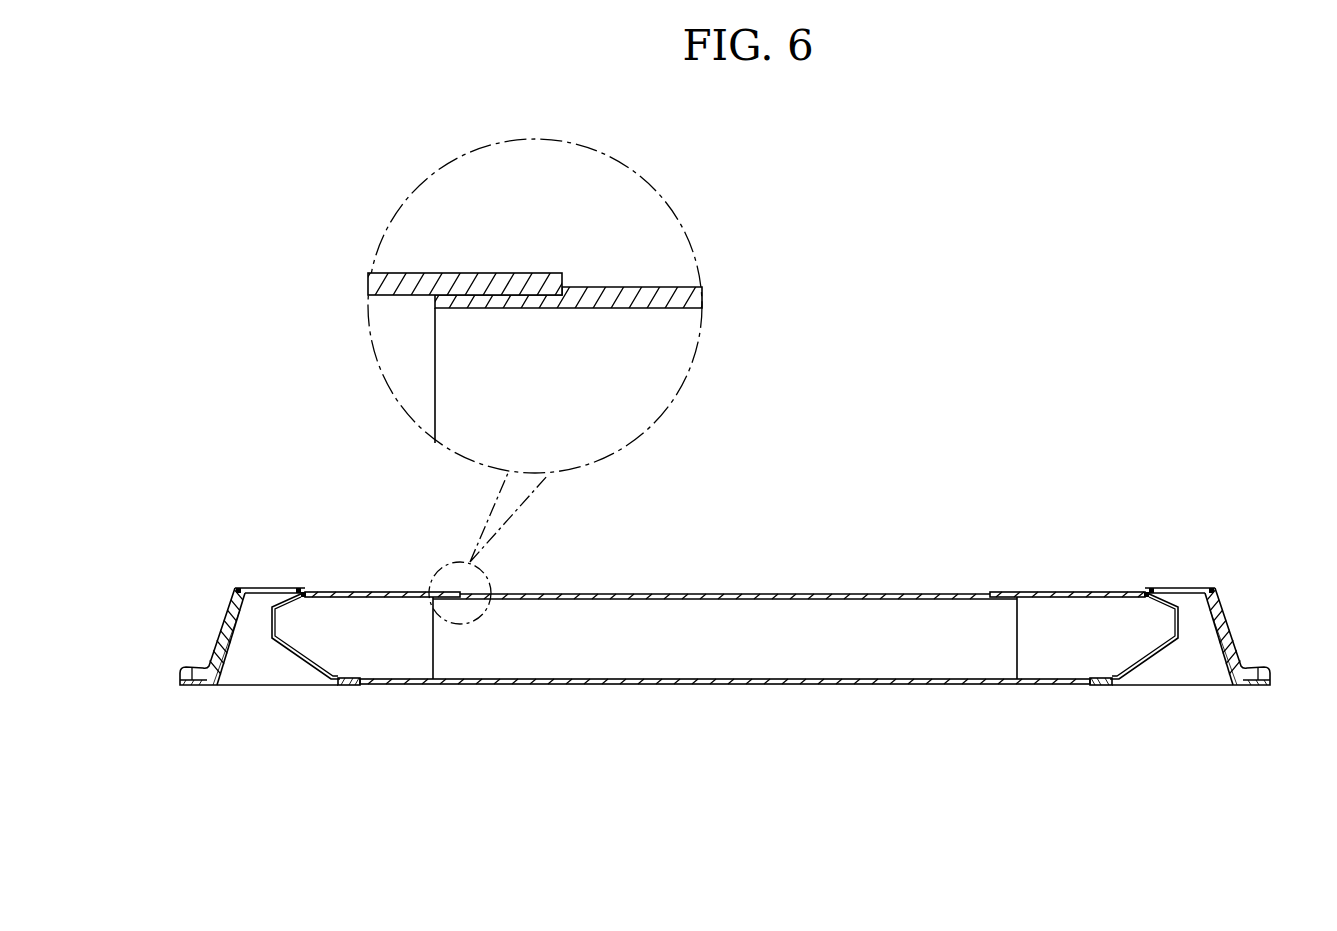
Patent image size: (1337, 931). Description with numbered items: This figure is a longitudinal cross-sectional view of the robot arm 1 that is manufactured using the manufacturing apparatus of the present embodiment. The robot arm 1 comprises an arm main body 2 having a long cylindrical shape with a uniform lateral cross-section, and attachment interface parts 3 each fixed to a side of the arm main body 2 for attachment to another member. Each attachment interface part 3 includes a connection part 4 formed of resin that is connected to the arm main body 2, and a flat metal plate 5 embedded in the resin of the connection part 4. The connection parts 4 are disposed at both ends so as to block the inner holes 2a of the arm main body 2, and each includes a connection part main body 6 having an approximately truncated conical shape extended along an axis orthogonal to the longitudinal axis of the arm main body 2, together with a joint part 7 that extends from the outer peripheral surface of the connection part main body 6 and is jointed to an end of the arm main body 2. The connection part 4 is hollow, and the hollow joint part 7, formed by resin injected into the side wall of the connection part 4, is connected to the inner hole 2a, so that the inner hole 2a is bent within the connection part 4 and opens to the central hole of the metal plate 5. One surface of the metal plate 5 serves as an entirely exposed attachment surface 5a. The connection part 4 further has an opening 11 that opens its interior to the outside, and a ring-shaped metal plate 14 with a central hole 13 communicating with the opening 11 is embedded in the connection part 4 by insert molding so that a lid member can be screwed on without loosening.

The robot arm 1 is at (930, 455).
The arm main body 2 is at (836, 586).
The inner hole 2a is at (366, 598).
The attachment interface part 3 is at (216, 583).
The connection part 4 is at (213, 615).
The metal plate 5 is at (344, 692).
The attachment surface 5a is at (187, 686).
The connection part main body 6 is at (212, 646).
The joint part 7 is at (403, 686).
The opening 11 is at (258, 590).
The central hole 13 is at (298, 590).
The metal plate 14 is at (303, 592).